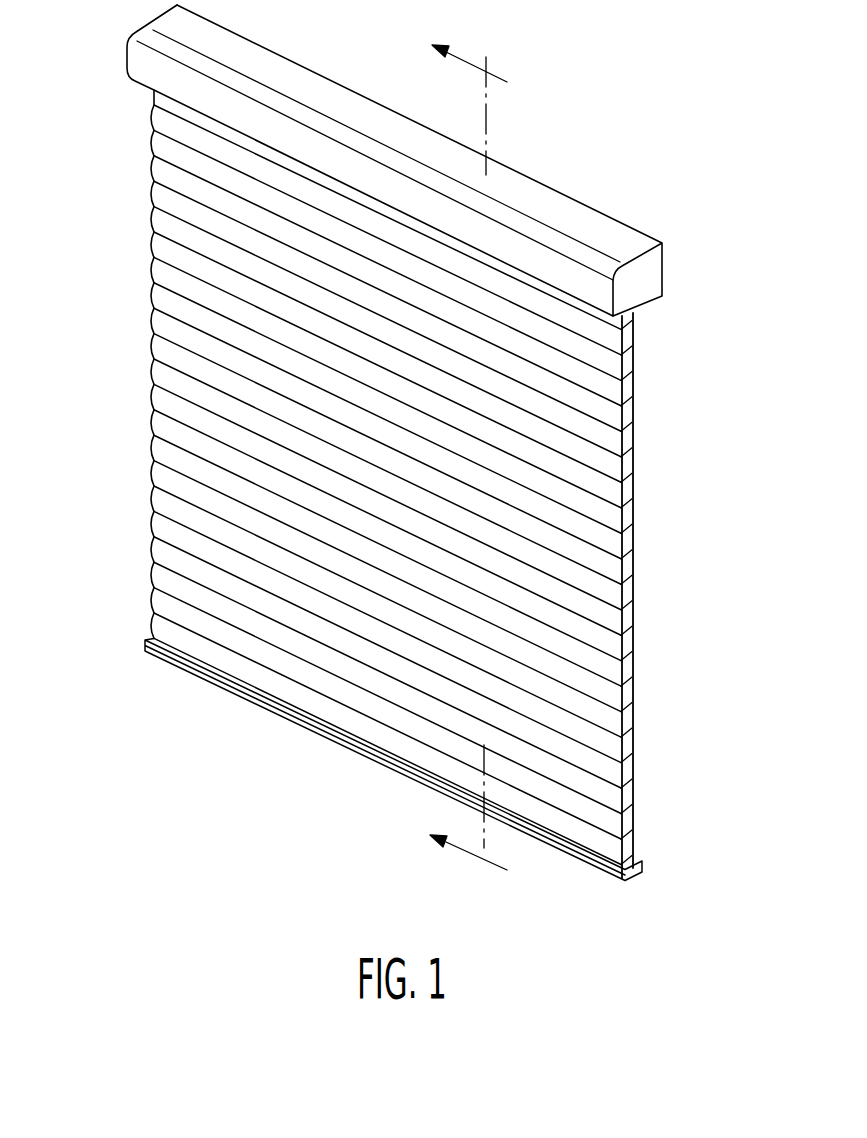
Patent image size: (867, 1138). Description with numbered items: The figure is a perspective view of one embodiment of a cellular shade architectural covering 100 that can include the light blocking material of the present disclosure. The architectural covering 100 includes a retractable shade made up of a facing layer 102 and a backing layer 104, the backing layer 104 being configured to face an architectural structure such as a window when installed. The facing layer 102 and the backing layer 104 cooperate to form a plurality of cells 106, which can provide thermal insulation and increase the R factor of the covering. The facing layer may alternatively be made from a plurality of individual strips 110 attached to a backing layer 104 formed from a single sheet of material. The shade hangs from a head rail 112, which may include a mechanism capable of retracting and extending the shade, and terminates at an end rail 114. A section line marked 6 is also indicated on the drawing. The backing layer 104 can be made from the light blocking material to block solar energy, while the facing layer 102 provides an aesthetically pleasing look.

The cellular shade architectural covering 100 is at (411, 443).
The facing layer 102 is at (166, 482).
The backing layer 104 is at (411, 484).
The cells 106 is at (648, 538).
The individual strips 110 is at (148, 373).
The head rail 112 is at (664, 267).
The end rail 114 is at (643, 860).
The section line 6- 6 is at (458, 450).